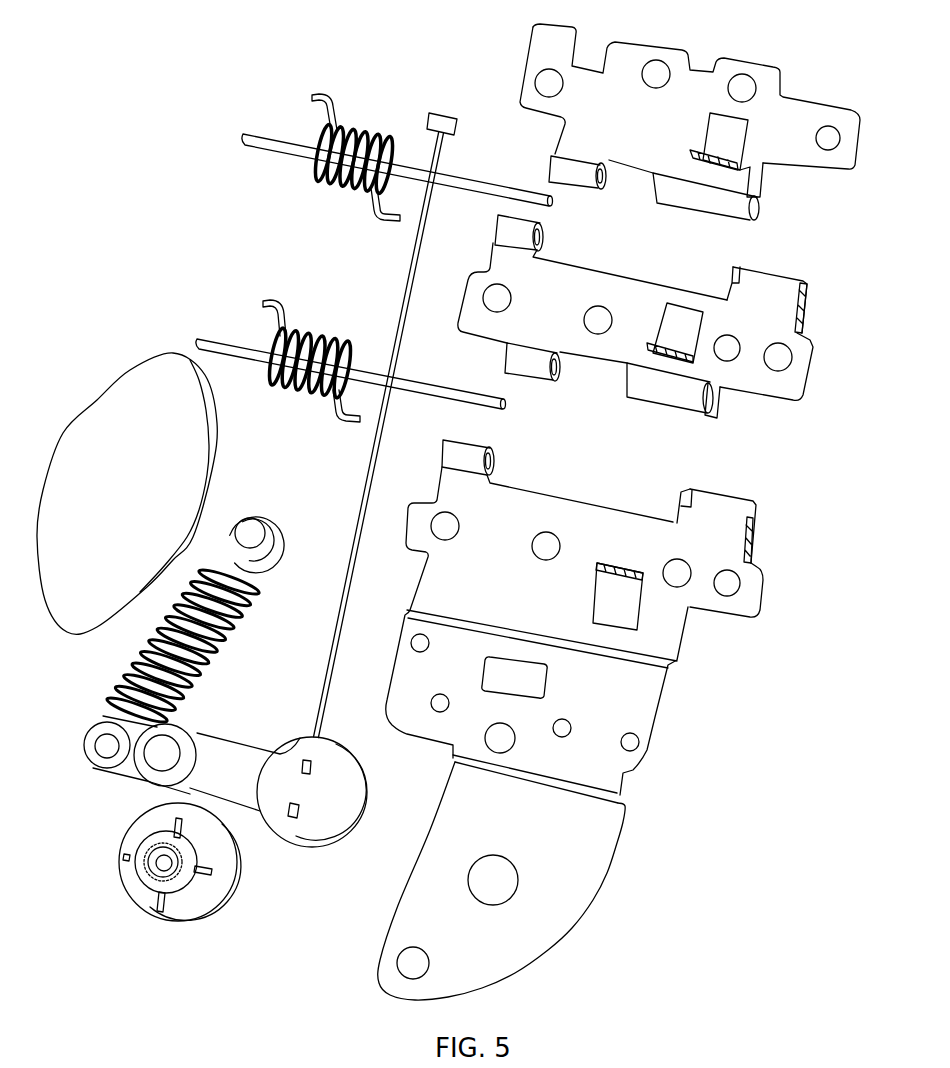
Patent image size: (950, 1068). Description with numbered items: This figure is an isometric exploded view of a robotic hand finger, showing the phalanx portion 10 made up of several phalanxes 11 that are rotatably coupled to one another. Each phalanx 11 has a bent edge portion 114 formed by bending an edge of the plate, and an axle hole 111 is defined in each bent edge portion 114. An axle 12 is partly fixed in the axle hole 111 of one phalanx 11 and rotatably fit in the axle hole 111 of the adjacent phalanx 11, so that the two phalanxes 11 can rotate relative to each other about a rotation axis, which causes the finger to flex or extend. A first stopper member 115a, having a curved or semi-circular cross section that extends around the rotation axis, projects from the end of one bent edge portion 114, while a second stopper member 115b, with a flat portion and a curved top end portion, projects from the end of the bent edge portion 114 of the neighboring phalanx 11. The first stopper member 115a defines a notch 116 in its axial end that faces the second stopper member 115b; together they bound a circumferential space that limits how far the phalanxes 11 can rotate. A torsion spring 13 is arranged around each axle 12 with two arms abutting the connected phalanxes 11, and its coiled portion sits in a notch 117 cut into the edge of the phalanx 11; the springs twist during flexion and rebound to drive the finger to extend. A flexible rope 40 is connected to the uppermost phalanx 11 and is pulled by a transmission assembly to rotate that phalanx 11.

The phalanx portion 10 is at (522, 121).
The phalanx 11 is at (603, 90).
The axle 12 is at (268, 141).
The torsion spring 13 is at (316, 179).
The rope 40 is at (404, 297).
The axle hole 111 is at (776, 290).
The bent edge portion 114 is at (722, 202).
The first stopper member 115a is at (761, 205).
The second stopper member 115b is at (728, 283).
The notch 116 is at (756, 224).
The notch 117 is at (636, 167).